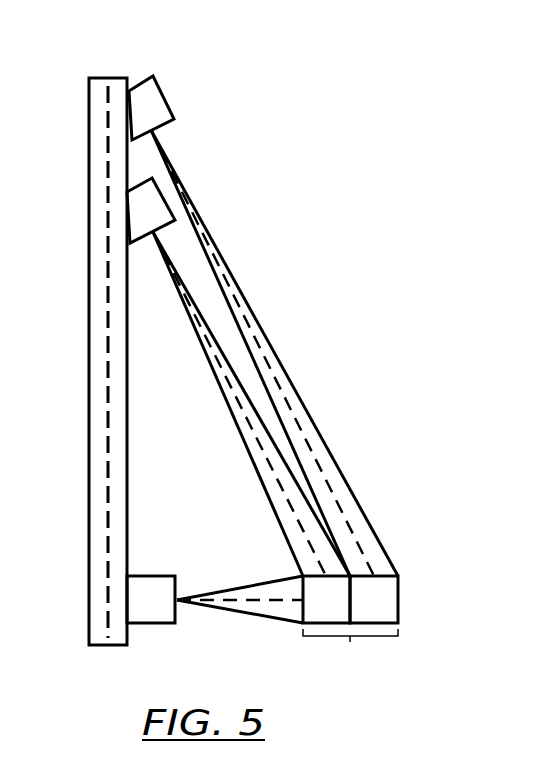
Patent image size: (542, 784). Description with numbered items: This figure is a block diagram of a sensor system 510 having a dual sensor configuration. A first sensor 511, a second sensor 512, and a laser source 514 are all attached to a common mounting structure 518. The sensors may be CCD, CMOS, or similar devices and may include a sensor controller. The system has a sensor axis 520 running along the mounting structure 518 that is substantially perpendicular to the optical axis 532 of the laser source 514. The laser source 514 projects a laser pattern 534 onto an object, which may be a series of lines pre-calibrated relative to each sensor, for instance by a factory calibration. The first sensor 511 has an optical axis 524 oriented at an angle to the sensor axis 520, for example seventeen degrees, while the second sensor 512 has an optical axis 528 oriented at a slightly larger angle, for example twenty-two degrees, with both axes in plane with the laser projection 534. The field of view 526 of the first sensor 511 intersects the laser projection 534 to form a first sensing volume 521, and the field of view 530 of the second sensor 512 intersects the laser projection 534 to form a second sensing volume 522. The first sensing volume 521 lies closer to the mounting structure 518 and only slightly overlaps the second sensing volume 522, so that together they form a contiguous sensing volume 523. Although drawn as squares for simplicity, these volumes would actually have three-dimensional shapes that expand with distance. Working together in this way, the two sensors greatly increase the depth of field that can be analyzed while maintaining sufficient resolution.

The sensor system 510 is at (296, 194).
The first sensor 511 is at (165, 200).
The second sensor 512 is at (165, 100).
The laser source 514 is at (143, 597).
The mounting structure 518 is at (88, 498).
The sensor axis 520 is at (102, 403).
The first sensing volume 521 is at (337, 603).
The second sensing volume 522 is at (375, 588).
The contiguous sensing volume 523 is at (350, 654).
The optical axis of the first sensor 524 is at (245, 418).
The field of view of the first sensor 526 is at (283, 517).
The optical axis of the second sensor 528 is at (312, 443).
The field of view of the second sensor 530 is at (358, 517).
The optical axis of the laser source 532 is at (220, 602).
The laser pattern 534 is at (280, 610).